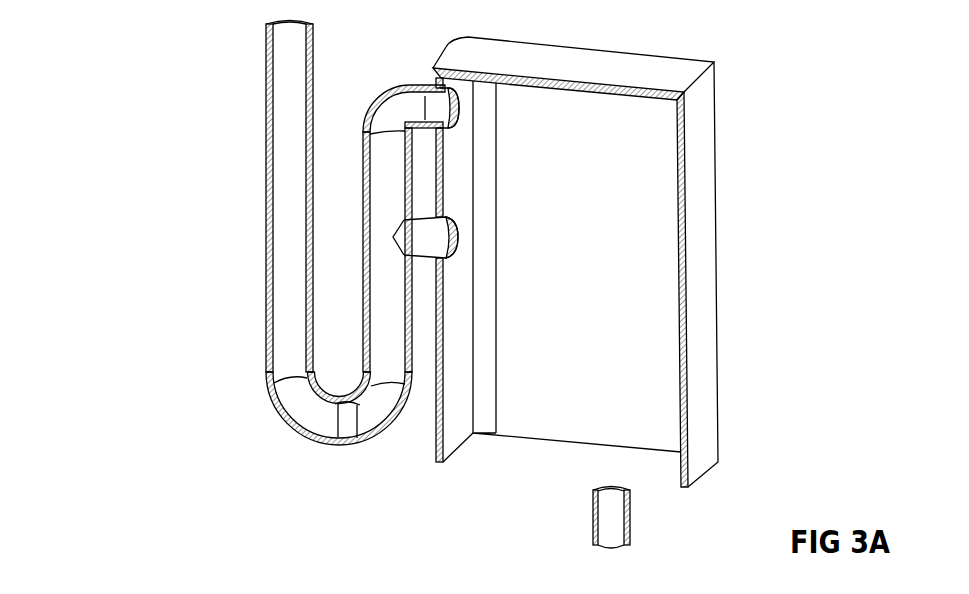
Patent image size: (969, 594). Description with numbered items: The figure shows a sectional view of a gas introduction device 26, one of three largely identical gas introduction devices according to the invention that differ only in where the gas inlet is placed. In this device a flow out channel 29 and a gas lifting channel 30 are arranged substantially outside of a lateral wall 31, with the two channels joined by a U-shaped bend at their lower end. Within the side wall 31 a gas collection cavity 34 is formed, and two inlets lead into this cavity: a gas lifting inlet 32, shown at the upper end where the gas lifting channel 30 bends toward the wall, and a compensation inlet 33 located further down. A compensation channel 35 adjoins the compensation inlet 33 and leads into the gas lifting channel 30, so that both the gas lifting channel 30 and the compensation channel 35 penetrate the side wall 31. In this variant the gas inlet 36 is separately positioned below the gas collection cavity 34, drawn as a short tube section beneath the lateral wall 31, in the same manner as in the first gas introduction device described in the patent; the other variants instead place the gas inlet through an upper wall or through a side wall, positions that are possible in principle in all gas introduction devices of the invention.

The gas introduction device 26 is at (141, 135).
The flow out channel 29 is at (285, 251).
The gas lifting channel 30 is at (386, 302).
The lateral wall 31 is at (688, 335).
The gas lifting inlet 32 is at (452, 110).
The compensation inlet 33 is at (457, 237).
The gas collection cavity 34 is at (632, 205).
The compensation channel 35 is at (433, 238).
The gas inlet 36 is at (630, 517).